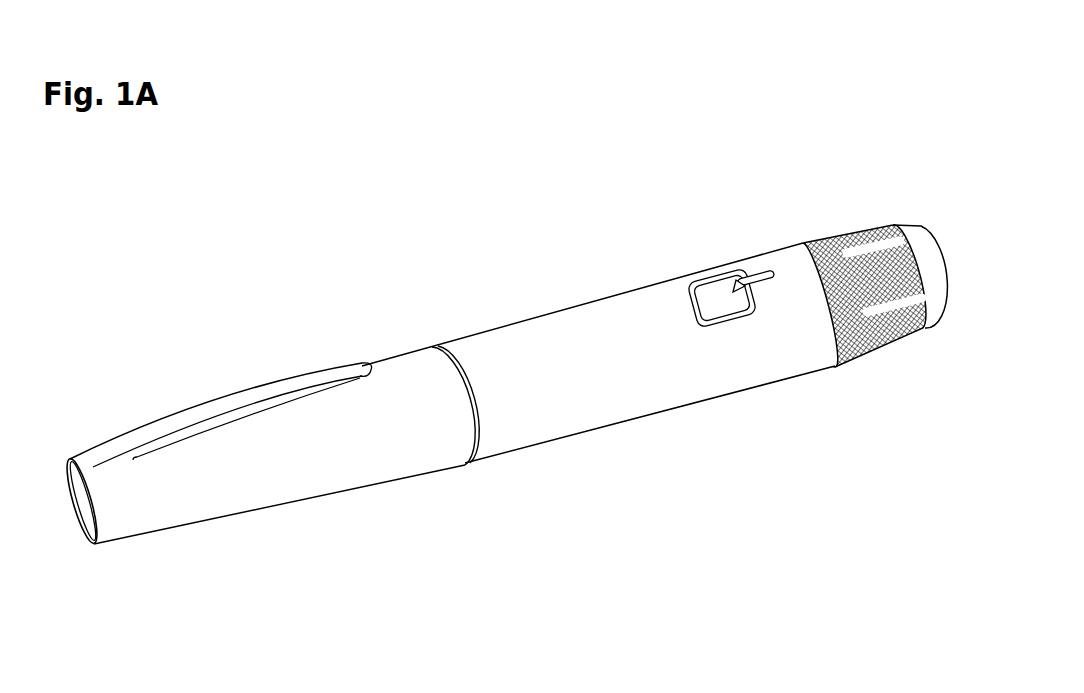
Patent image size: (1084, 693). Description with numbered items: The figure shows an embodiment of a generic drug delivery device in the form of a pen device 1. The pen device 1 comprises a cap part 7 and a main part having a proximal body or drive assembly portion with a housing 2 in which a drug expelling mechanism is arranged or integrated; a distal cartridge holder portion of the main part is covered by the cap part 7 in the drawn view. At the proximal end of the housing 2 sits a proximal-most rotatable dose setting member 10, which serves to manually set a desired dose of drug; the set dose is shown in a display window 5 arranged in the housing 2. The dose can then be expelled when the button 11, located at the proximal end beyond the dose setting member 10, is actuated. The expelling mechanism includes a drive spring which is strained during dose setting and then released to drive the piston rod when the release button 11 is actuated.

The pen device 1 is at (418, 242).
The housing 2 is at (695, 375).
The display window 5 is at (708, 277).
The cap part 7 is at (227, 437).
The dose setting member 10 is at (882, 345).
The button 11 is at (917, 243).